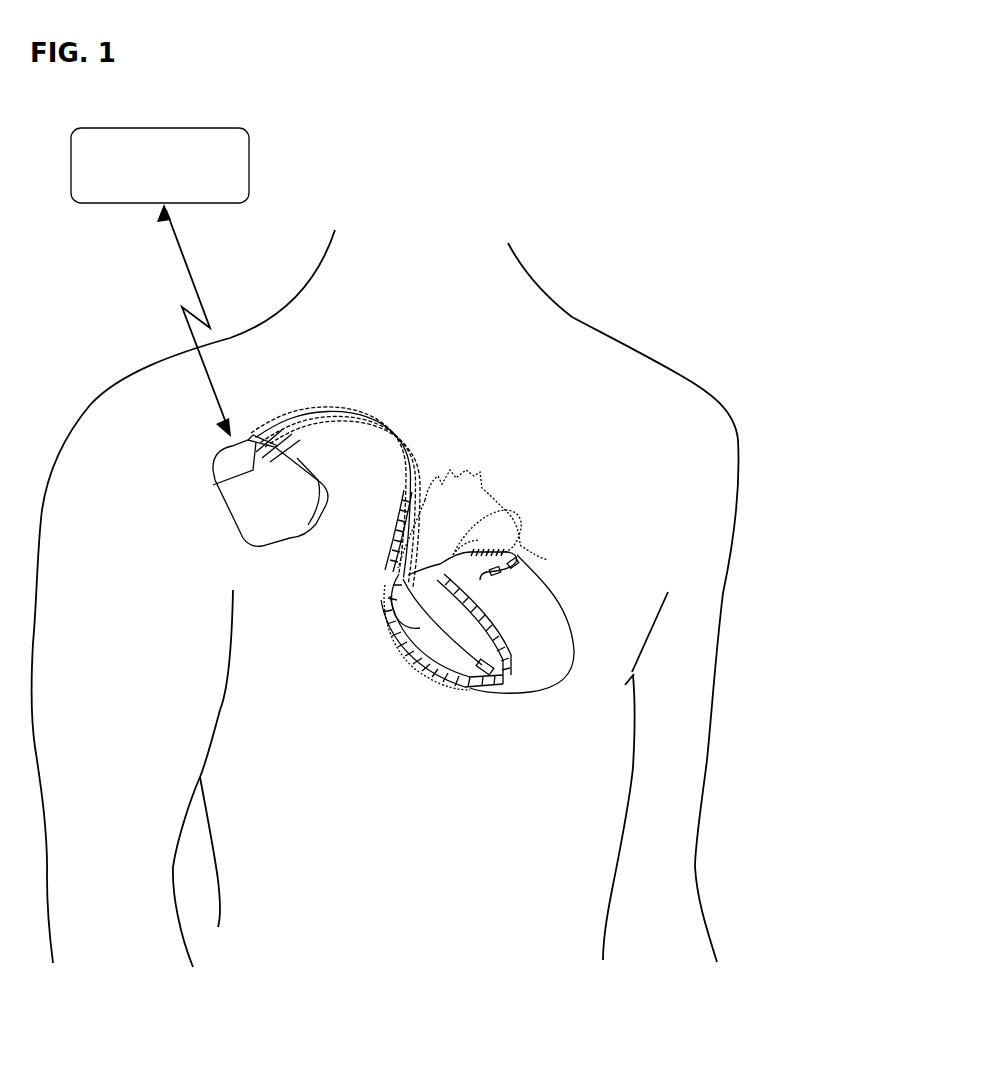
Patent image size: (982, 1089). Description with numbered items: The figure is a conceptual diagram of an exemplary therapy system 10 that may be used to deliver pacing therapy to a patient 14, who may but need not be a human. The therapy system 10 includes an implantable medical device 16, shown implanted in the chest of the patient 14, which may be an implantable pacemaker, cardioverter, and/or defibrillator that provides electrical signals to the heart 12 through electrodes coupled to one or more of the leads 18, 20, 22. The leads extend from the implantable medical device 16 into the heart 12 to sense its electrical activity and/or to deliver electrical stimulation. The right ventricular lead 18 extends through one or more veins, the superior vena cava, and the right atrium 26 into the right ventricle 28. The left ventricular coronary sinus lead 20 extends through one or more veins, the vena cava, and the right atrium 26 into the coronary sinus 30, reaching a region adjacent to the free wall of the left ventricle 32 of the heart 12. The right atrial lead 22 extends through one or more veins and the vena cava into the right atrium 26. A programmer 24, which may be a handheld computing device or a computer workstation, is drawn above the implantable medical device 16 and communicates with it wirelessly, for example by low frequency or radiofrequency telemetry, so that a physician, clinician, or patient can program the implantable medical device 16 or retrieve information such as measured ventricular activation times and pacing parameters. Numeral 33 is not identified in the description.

The therapy system 10 is at (576, 128).
The heart 12 is at (525, 703).
The patient 14 is at (606, 335).
The implantable medical device 16 is at (222, 515).
The right ventricular lead 18 is at (377, 433).
The left ventricular coronary sinus lead 20 is at (415, 449).
The right atrial lead 22 is at (402, 465).
The programmer 24 is at (160, 165).
The right atrium 26 is at (393, 590).
The right ventricle 28 is at (432, 648).
The coronary sinus 30 is at (441, 558).
The left ventricle 32 is at (540, 604).
The left atrium 33 is at (480, 511).